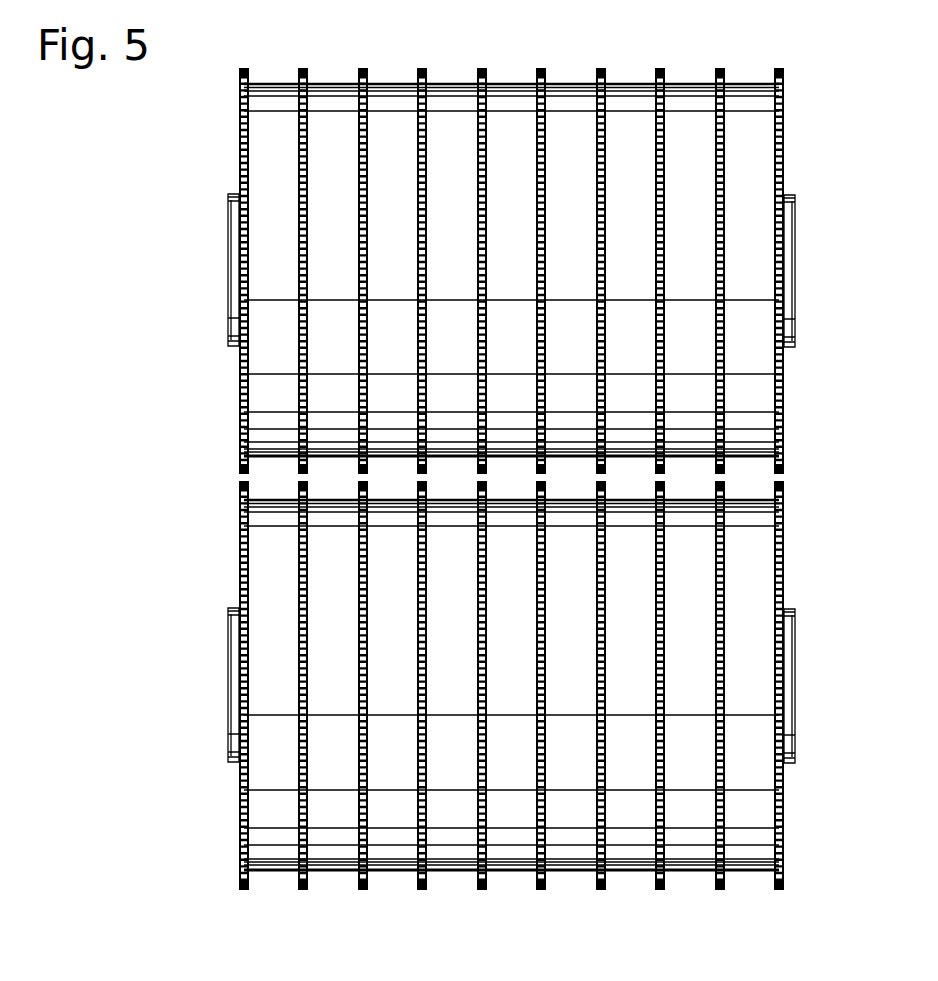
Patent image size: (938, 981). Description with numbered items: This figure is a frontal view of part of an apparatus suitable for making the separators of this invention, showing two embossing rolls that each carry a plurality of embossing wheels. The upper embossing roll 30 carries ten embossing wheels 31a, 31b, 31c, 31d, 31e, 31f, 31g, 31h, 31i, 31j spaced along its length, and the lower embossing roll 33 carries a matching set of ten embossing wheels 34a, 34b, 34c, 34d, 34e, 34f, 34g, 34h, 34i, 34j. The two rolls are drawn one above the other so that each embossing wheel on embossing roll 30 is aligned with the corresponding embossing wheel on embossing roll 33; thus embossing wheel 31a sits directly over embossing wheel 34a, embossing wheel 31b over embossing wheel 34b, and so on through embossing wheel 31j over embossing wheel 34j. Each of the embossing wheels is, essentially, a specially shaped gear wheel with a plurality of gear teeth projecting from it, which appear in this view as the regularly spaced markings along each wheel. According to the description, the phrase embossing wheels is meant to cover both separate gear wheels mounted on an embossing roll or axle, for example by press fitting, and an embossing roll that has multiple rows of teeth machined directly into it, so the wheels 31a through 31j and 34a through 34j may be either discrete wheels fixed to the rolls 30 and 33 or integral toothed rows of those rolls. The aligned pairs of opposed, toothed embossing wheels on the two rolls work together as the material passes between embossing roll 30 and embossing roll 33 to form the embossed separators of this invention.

The embossing roll 30 is at (200, 170).
The embossing roll 33 is at (200, 579).
The embossing wheel 31a is at (244, 68).
The embossing wheel 31b is at (303, 68).
The embossing wheel 31c is at (363, 68).
The embossing wheel 31d is at (422, 68).
The embossing wheel 31e is at (482, 68).
The embossing wheel 31f is at (541, 68).
The embossing wheel 31g is at (601, 68).
The embossing wheel 31h is at (660, 68).
The embossing wheel 31i is at (720, 68).
The embossing wheel 31j is at (779, 68).
The embossing wheel 34a is at (244, 890).
The embossing wheel 34b is at (303, 890).
The embossing wheel 34c is at (363, 890).
The embossing wheel 34d is at (422, 890).
The embossing wheel 34e is at (482, 890).
The embossing wheel 34f is at (541, 890).
The embossing wheel 34g is at (601, 890).
The embossing wheel 34h is at (660, 890).
The embossing wheel 34i is at (720, 890).
The embossing wheel 34j is at (779, 890).